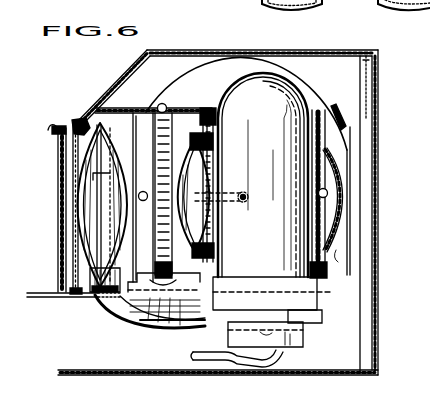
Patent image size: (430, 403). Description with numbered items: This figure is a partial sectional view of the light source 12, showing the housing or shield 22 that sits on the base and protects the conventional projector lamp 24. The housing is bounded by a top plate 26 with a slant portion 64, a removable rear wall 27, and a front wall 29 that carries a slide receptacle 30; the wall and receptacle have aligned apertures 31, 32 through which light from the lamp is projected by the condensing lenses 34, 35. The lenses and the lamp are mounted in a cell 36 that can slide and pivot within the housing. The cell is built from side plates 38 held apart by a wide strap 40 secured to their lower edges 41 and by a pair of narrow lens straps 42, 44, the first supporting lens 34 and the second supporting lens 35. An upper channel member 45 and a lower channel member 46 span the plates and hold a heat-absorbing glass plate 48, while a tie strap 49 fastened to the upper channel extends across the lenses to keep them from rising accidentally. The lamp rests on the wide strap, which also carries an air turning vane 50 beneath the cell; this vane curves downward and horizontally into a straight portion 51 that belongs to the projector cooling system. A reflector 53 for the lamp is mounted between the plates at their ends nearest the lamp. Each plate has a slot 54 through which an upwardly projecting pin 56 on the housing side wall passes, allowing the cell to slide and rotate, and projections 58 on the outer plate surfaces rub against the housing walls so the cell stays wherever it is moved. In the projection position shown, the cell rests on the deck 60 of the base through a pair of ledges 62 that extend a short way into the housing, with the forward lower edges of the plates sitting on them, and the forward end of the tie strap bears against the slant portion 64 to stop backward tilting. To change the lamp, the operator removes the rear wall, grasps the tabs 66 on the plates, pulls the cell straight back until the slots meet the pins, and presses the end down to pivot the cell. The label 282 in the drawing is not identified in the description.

The light source 12 is at (205, 28).
The housing 22 is at (268, 50).
The projector lamp 24 is at (270, 142).
The top plate 26 is at (330, 50).
The rear wall 27 is at (376, 70).
The front wall 29 is at (74, 298).
The slide receptacle 30 is at (50, 128).
The aperture 31 is at (72, 242).
The aperture 32 is at (54, 146).
The condensing lens 34 is at (88, 120).
The condensing lens 35 is at (204, 110).
The cell 36 is at (194, 52).
The side plates 38 is at (338, 137).
The wide strap 40 is at (318, 298).
The lower edges 41 is at (236, 350).
The lens strap 42 is at (103, 296).
The lens strap 44 is at (215, 252).
The upper channel member 45 is at (164, 125).
The lower channel member 46 is at (164, 270).
The heat-absorbing glass plate 48 is at (157, 202).
The tie strap 49 is at (135, 110).
The air turning vane 50 is at (120, 312).
The straight portion 51 is at (182, 332).
The reflector 53 is at (334, 200).
The slot 54 is at (244, 192).
The pin 56 is at (248, 200).
The projections 58 is at (328, 193).
The deck 60 is at (44, 300).
The ledges 62 is at (130, 300).
The slant portion 64 is at (130, 70).
The tabs 66 is at (337, 108).
The pad 282 is at (180, 328).